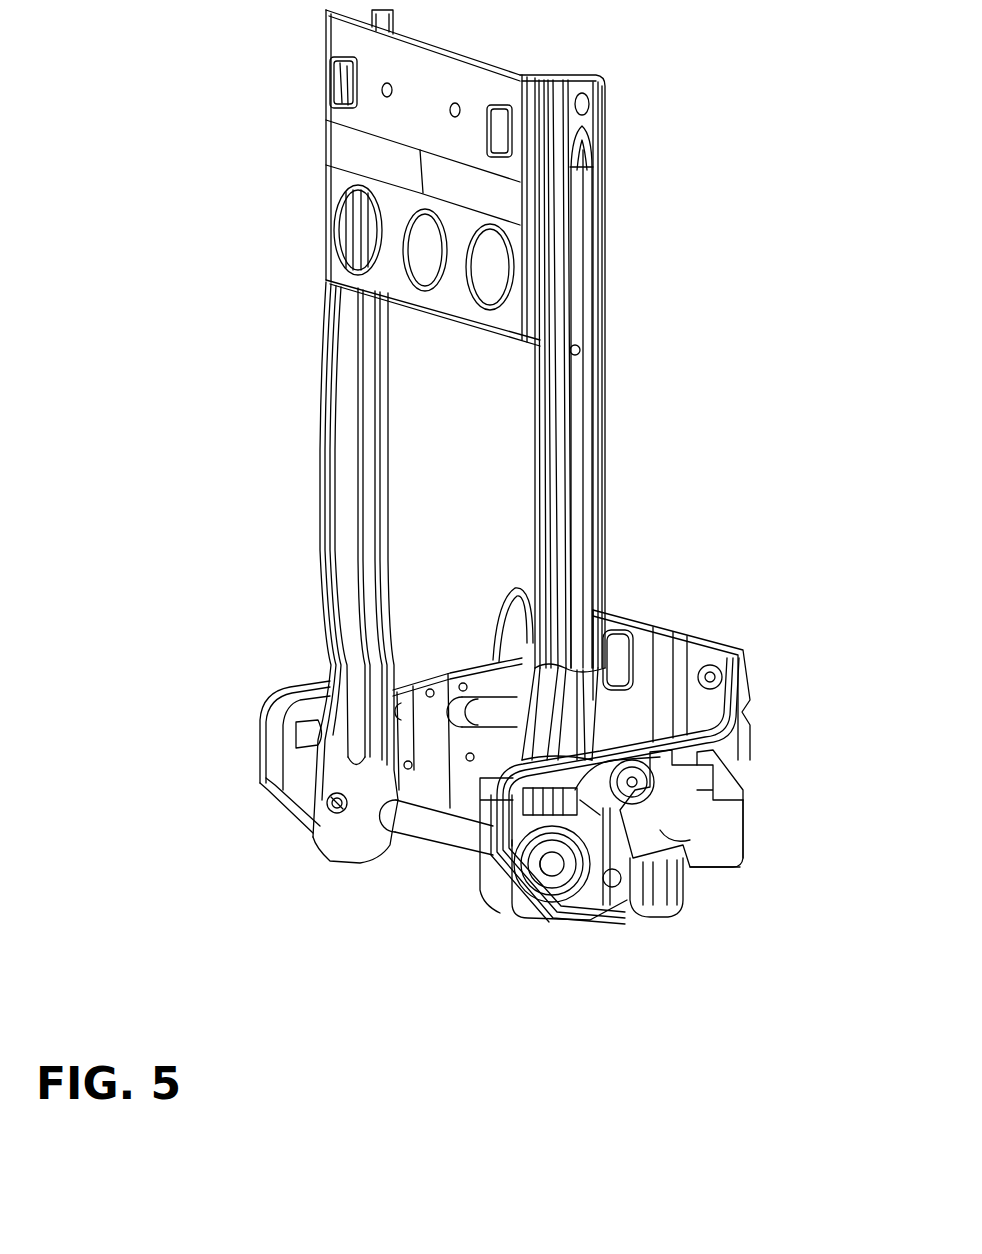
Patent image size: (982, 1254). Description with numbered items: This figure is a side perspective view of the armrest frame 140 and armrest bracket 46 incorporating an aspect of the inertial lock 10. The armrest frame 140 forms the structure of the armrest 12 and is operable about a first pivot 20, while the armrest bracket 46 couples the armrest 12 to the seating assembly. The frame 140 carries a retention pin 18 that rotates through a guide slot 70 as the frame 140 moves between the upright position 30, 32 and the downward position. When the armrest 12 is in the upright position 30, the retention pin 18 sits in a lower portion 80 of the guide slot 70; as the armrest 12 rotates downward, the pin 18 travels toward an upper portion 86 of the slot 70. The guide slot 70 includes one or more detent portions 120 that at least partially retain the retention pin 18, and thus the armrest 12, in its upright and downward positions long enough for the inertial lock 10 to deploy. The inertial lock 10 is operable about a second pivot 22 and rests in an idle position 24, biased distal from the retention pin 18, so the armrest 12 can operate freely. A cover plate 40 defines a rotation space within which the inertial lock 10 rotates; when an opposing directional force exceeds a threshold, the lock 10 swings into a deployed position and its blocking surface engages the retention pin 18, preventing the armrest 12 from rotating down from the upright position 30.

The inertial lock 10 is at (539, 866).
The armrest 12 is at (285, 276).
The retention pin 18 is at (617, 893).
The first pivot 20 is at (535, 872).
The second pivot 22 is at (632, 782).
The idle position 24 is at (567, 897).
The upright position 30 is at (312, 183).
The upright position 32 is at (302, 537).
The cover plate 40 is at (713, 813).
The armrest bracket 46 is at (690, 840).
The guide slot 70 is at (575, 790).
The lower portion 80 is at (617, 850).
The upper portion 86 is at (547, 768).
The detent portion 120 is at (598, 813).
The armrest frame 140 is at (578, 490).